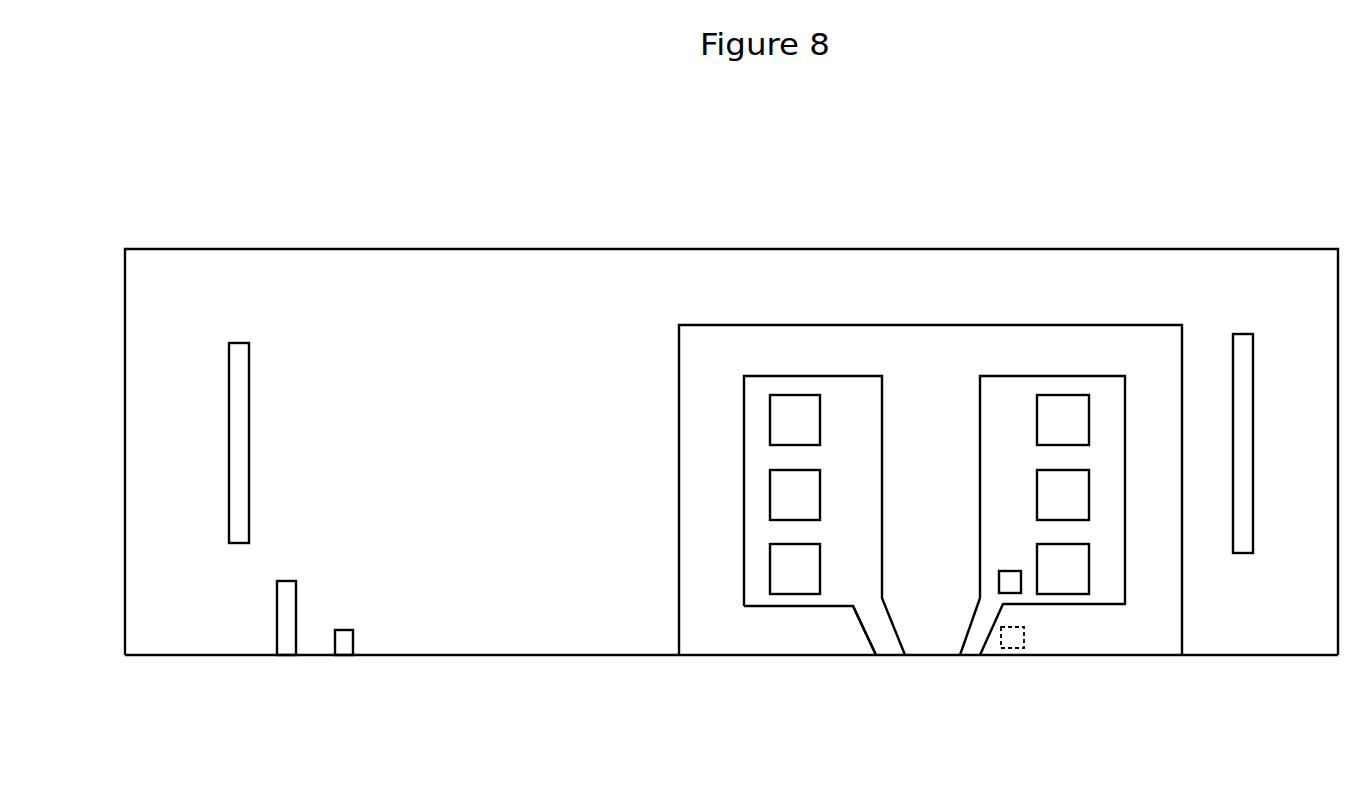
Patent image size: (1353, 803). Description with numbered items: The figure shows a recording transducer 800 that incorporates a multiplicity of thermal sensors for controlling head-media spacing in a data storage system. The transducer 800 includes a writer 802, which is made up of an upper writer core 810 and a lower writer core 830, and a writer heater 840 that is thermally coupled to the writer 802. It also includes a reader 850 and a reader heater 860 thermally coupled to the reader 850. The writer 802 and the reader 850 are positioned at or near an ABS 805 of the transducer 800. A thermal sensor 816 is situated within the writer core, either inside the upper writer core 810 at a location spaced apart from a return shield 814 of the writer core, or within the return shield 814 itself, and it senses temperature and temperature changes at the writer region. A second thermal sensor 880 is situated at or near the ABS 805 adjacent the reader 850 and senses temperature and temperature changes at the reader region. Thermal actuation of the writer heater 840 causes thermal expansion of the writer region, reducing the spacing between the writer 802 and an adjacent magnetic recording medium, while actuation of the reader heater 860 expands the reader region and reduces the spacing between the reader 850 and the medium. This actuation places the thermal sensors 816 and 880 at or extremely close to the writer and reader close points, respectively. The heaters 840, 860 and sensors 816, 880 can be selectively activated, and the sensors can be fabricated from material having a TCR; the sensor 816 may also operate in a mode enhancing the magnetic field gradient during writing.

The recording transducer 800 is at (428, 197).
The writer 802 is at (724, 296).
The ABS 805 is at (591, 695).
The upper writer core 810 is at (807, 292).
The return shield 814 is at (788, 643).
The thermal sensor 816 is at (1010, 593).
The lower writer core 830 is at (1074, 294).
The writer heater 840 is at (1243, 334).
The reader 850 is at (296, 590).
The reader heater 860 is at (249, 404).
The thermal sensor 880 is at (353, 637).